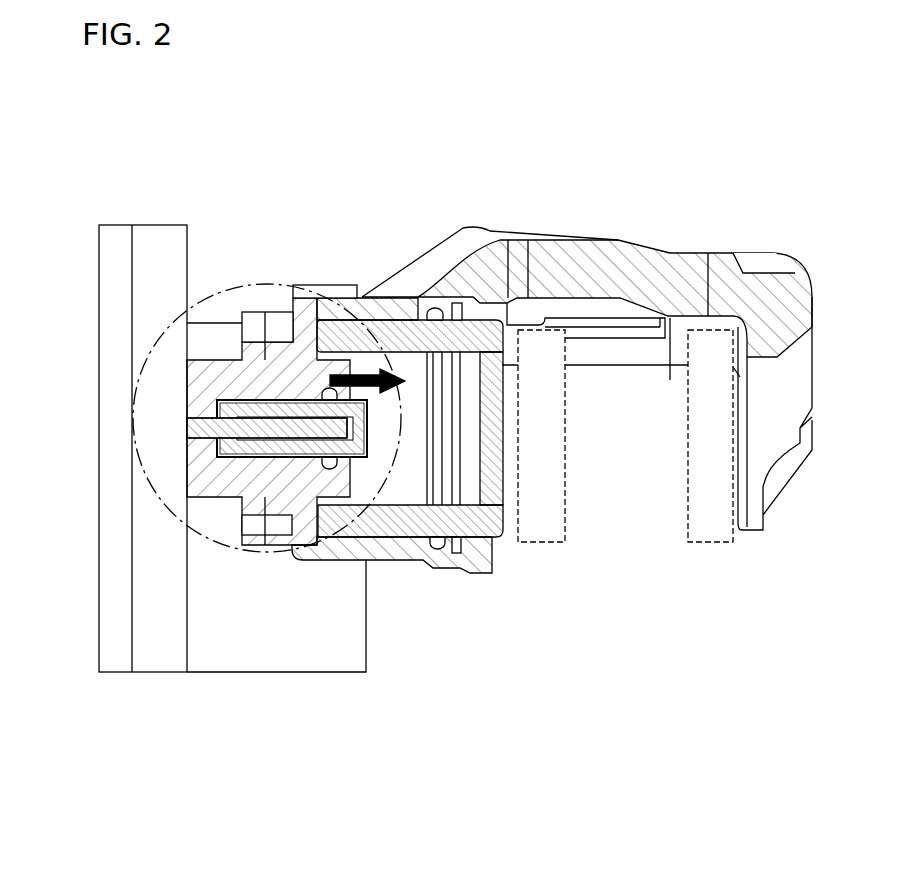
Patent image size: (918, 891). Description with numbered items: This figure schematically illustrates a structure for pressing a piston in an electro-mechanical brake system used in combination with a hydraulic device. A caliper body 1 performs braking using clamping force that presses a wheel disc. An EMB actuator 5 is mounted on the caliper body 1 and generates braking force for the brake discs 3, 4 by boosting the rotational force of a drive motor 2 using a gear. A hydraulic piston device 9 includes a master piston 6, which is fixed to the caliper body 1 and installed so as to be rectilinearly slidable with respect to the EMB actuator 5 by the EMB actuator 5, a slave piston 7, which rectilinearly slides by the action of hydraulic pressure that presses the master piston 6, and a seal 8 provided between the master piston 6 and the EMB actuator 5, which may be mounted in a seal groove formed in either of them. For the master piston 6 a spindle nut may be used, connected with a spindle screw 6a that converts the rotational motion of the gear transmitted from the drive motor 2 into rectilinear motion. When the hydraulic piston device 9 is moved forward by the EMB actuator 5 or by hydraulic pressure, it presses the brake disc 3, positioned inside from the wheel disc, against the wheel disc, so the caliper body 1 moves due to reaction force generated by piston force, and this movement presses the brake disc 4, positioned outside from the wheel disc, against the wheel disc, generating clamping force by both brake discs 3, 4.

The caliper body 1 is at (579, 262).
The drive motor 2 is at (252, 653).
The brake disc 3 is at (540, 523).
The brake disc 4 is at (712, 523).
The EMB actuator 5 is at (235, 290).
The master piston 6 is at (286, 406).
The spindle screw 6a is at (202, 423).
The slave piston 7 is at (387, 337).
The seal 8 is at (322, 403).
The hydraulic piston device 9 is at (332, 226).